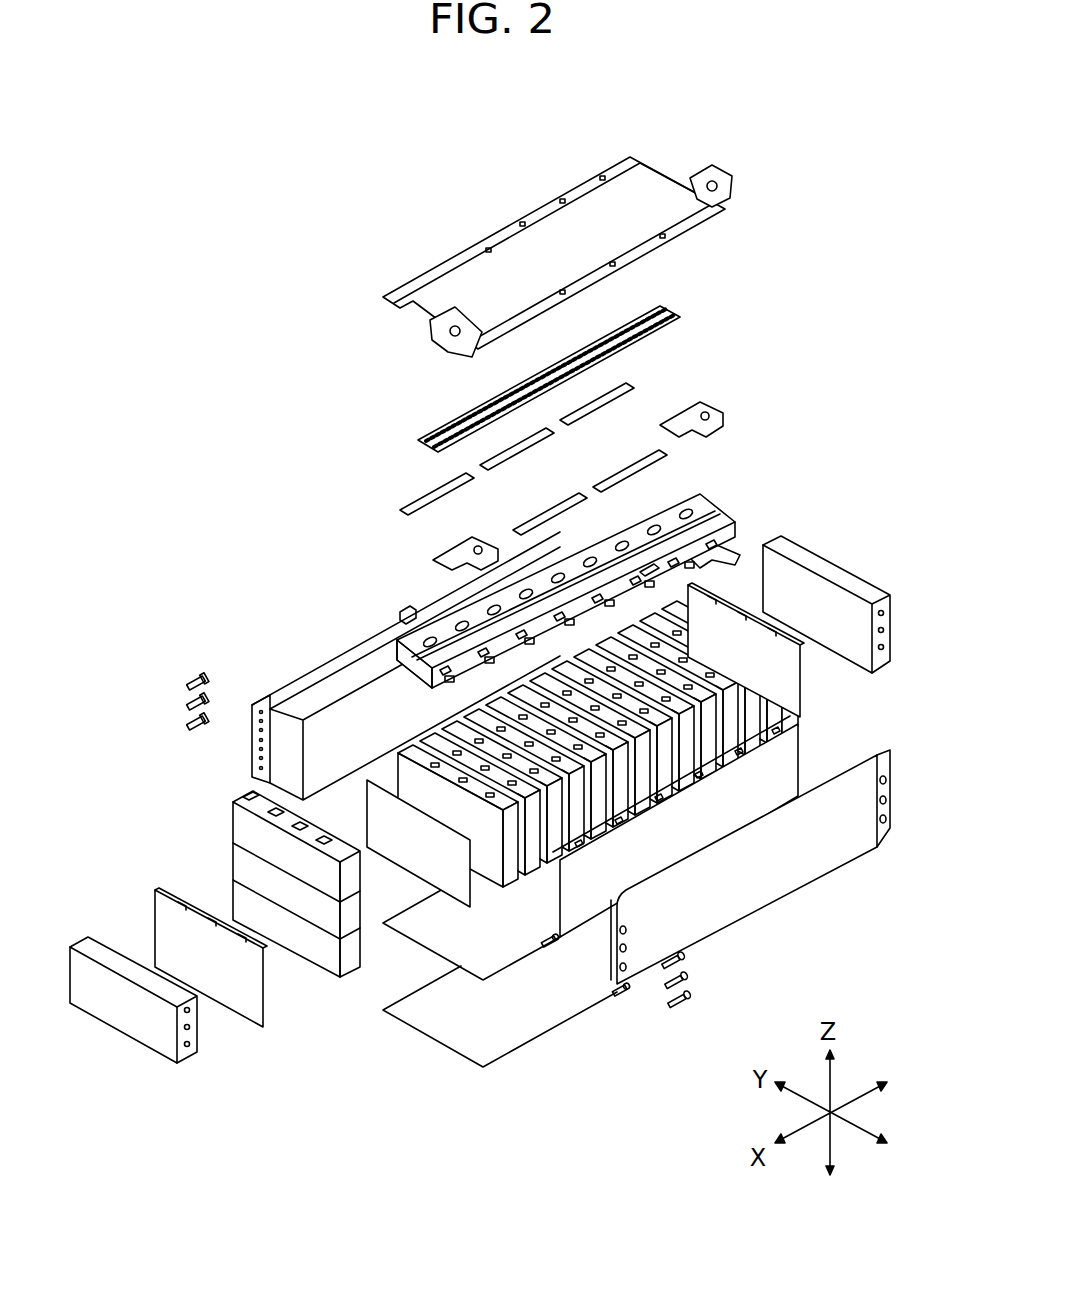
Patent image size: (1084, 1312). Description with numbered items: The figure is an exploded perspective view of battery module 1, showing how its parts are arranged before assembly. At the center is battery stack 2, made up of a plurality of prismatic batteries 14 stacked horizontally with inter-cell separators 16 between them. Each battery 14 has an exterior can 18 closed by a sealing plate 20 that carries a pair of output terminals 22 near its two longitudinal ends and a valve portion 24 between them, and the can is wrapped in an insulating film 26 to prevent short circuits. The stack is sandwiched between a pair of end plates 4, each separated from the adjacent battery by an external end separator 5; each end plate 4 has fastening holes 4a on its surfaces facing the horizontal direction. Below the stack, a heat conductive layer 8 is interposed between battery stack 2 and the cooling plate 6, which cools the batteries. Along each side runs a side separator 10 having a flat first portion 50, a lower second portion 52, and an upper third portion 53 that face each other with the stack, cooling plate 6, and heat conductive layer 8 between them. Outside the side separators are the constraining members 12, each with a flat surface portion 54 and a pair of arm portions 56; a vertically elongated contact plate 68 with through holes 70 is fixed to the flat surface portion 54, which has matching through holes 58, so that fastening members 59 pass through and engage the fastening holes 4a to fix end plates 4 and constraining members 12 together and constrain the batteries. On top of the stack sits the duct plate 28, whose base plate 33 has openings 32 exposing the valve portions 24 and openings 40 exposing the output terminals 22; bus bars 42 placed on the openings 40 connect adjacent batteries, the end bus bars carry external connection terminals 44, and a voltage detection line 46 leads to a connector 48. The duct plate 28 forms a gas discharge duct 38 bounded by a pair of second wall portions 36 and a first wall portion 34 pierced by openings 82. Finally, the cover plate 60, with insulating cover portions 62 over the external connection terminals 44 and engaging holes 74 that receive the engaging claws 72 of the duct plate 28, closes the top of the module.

The battery module 1 is at (510, 1185).
The battery stack 2 is at (742, 702).
The end plate 4 is at (480, 825).
The fastening hole 4a is at (190, 1065).
The external end separator 5 is at (804, 656).
The cooling plate 6 is at (512, 1058).
The heat conductive layer 8 is at (590, 886).
The side separator 10 is at (362, 675).
The constraining member 12 is at (537, 741).
The battery 14 is at (223, 893).
The inter-cell separator 16 is at (416, 850).
The exterior can 18 is at (231, 818).
The sealing plate 20 is at (247, 789).
The output terminal 22 is at (253, 748).
The valve portion 24 is at (306, 823).
The insulating film 26 is at (232, 887).
The duct plate 28 is at (565, 564).
The opening 32 is at (398, 590).
The base plate 33 is at (610, 547).
The first wall portion 34 is at (598, 368).
The second wall portion 36 is at (648, 493).
The gas discharge duct 38 is at (667, 530).
The opening 40 is at (706, 565).
The bus bar 42 is at (400, 507).
The external connection terminal 44 is at (700, 400).
The voltage detection line 46 is at (432, 593).
The connector 48 is at (395, 624).
The first portion 50 is at (577, 905).
The second portion 52 is at (549, 948).
The third portion 53 is at (800, 722).
The flat surface portion 54 is at (783, 913).
The arm portion 56 is at (783, 913).
The through hole 58 is at (895, 818).
The fastening member 59 is at (698, 1012).
The cover plate 60 is at (650, 152).
The insulating cover portion 62 is at (714, 184).
The contact plate 68 is at (256, 700).
The through hole 70 is at (240, 718).
The engaging claw 72 is at (655, 592).
The engaging hole 74 is at (656, 237).
The opening 82 is at (614, 367).